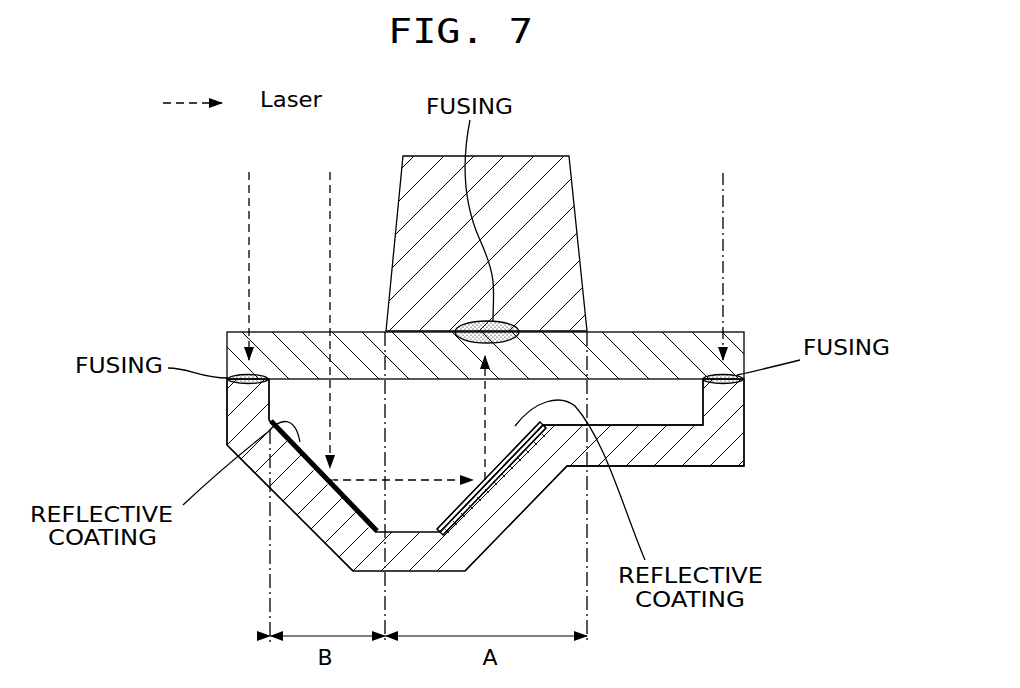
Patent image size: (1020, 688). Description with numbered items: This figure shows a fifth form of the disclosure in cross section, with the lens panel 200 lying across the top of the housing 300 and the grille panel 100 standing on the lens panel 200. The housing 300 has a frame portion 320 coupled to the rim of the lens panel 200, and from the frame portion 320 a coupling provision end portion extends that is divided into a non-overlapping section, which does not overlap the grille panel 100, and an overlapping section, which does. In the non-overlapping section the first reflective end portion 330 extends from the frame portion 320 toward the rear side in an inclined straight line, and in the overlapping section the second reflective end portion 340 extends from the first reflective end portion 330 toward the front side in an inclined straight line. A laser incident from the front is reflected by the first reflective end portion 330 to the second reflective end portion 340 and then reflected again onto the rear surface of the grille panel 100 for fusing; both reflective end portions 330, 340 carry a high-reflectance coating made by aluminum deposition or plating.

The grille panel 100 is at (590, 198).
The lens panel 200 is at (654, 316).
The housing 300 is at (739, 485).
The frame portion 320 is at (246, 409).
The first reflective end portion 330 is at (318, 515).
The second reflective end portion 340 is at (495, 517).